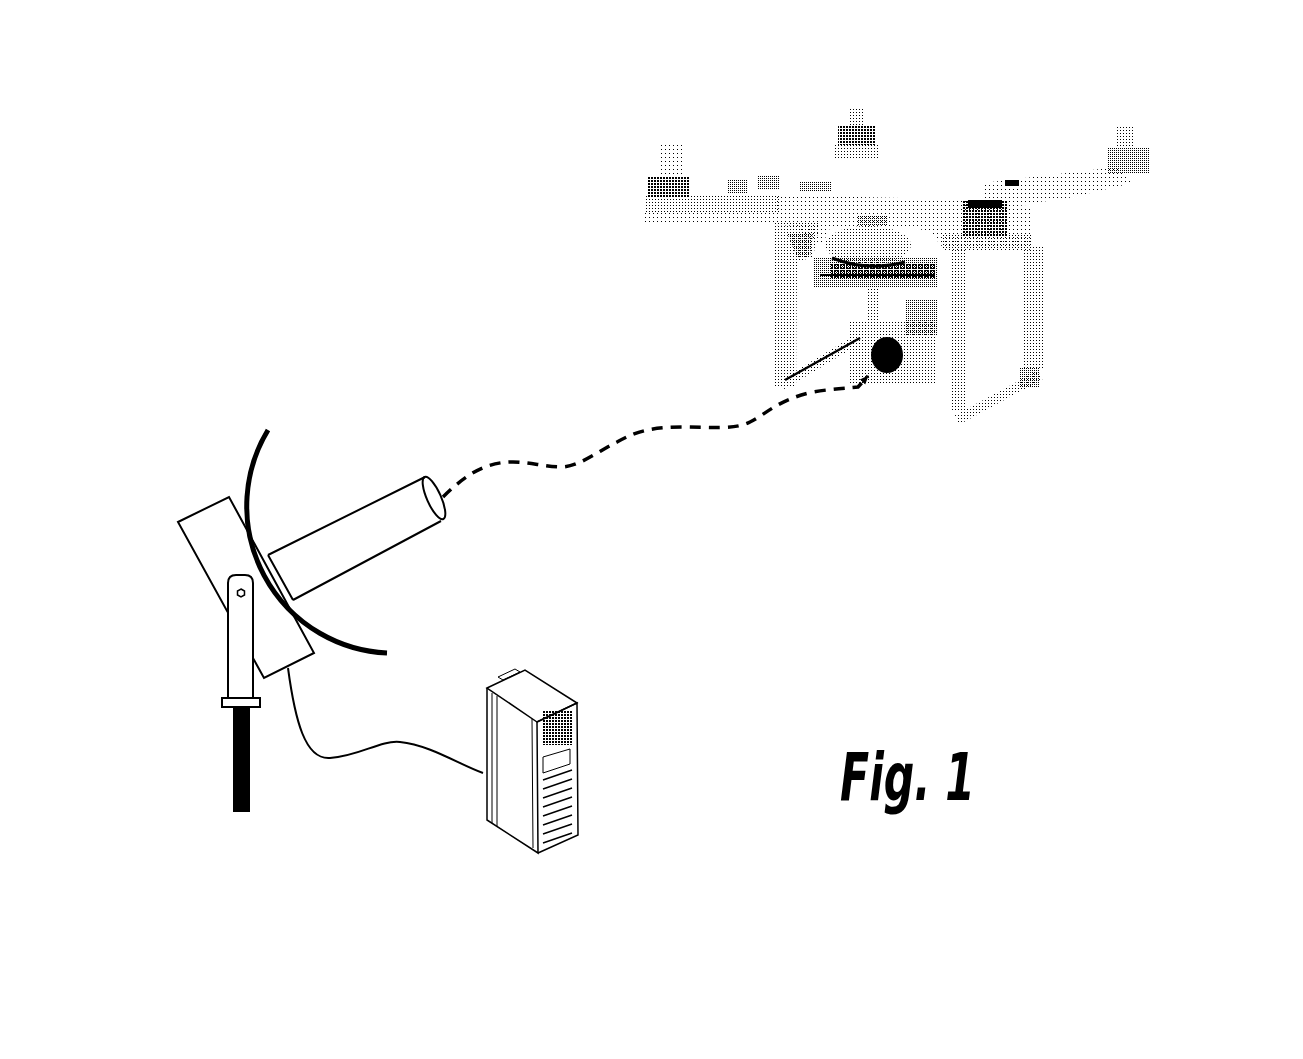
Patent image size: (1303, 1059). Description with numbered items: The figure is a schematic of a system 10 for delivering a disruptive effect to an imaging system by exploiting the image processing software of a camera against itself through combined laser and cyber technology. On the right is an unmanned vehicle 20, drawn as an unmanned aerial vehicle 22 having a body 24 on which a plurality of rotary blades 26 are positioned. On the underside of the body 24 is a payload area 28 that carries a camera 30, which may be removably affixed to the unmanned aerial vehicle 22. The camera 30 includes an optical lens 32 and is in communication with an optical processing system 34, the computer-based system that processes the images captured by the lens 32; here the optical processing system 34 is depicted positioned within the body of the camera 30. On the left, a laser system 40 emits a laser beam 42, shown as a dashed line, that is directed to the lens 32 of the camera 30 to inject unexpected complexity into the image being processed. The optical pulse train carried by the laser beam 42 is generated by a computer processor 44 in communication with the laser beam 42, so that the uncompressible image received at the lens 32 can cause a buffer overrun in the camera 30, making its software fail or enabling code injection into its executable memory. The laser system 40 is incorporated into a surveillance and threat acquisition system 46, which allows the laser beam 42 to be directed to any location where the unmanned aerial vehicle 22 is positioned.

The system 10 is at (386, 188).
The unmanned vehicle 20 is at (962, 263).
The unmanned aerial vehicle 22 is at (1030, 255).
The body 24 is at (917, 164).
The rotary blades 26 is at (857, 105).
The payload area 28 is at (795, 270).
The camera 30 is at (946, 344).
The optical lens 32 is at (902, 362).
The optical processing system 34 is at (928, 357).
The laser system 40 is at (360, 528).
The laser beam 42 is at (678, 428).
The computer processor 44 is at (568, 775).
The surveillance and threat acquisition system 46 is at (220, 537).